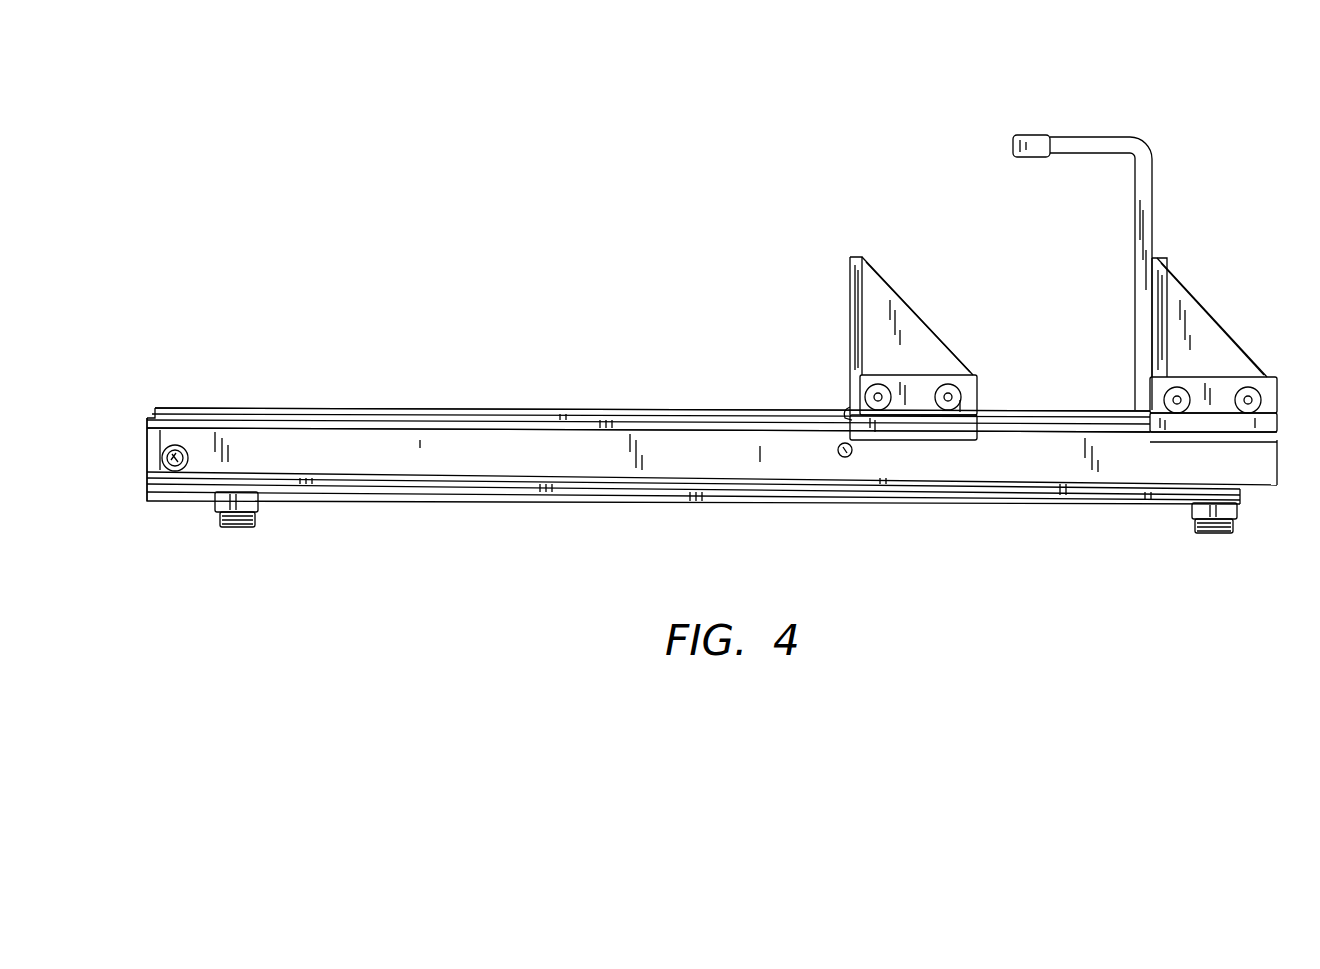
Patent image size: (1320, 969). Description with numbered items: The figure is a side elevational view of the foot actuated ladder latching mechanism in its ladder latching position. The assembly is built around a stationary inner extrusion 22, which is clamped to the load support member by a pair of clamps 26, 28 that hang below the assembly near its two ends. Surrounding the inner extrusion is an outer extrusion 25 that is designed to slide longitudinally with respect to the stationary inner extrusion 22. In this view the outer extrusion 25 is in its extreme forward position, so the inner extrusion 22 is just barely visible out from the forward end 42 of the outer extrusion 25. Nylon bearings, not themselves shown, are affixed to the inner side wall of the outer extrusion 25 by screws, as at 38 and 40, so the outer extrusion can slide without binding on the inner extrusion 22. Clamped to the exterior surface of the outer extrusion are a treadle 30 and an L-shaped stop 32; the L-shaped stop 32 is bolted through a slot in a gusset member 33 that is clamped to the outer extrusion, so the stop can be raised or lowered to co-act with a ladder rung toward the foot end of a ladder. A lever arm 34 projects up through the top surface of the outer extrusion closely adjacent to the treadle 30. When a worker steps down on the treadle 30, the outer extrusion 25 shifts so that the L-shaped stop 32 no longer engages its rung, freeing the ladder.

The stationary inner extrusion 22 is at (146, 453).
The outer extrusion 25 is at (453, 445).
The clamp 26 is at (250, 520).
The clamp 28 is at (1215, 535).
The treadle 30 is at (855, 262).
The L-shaped stop 32 is at (1113, 135).
The gusset member 33 is at (1203, 310).
The lever arm 34 is at (857, 380).
The screw 38 is at (185, 448).
The screw 40 is at (841, 445).
The forward end 42 is at (157, 437).